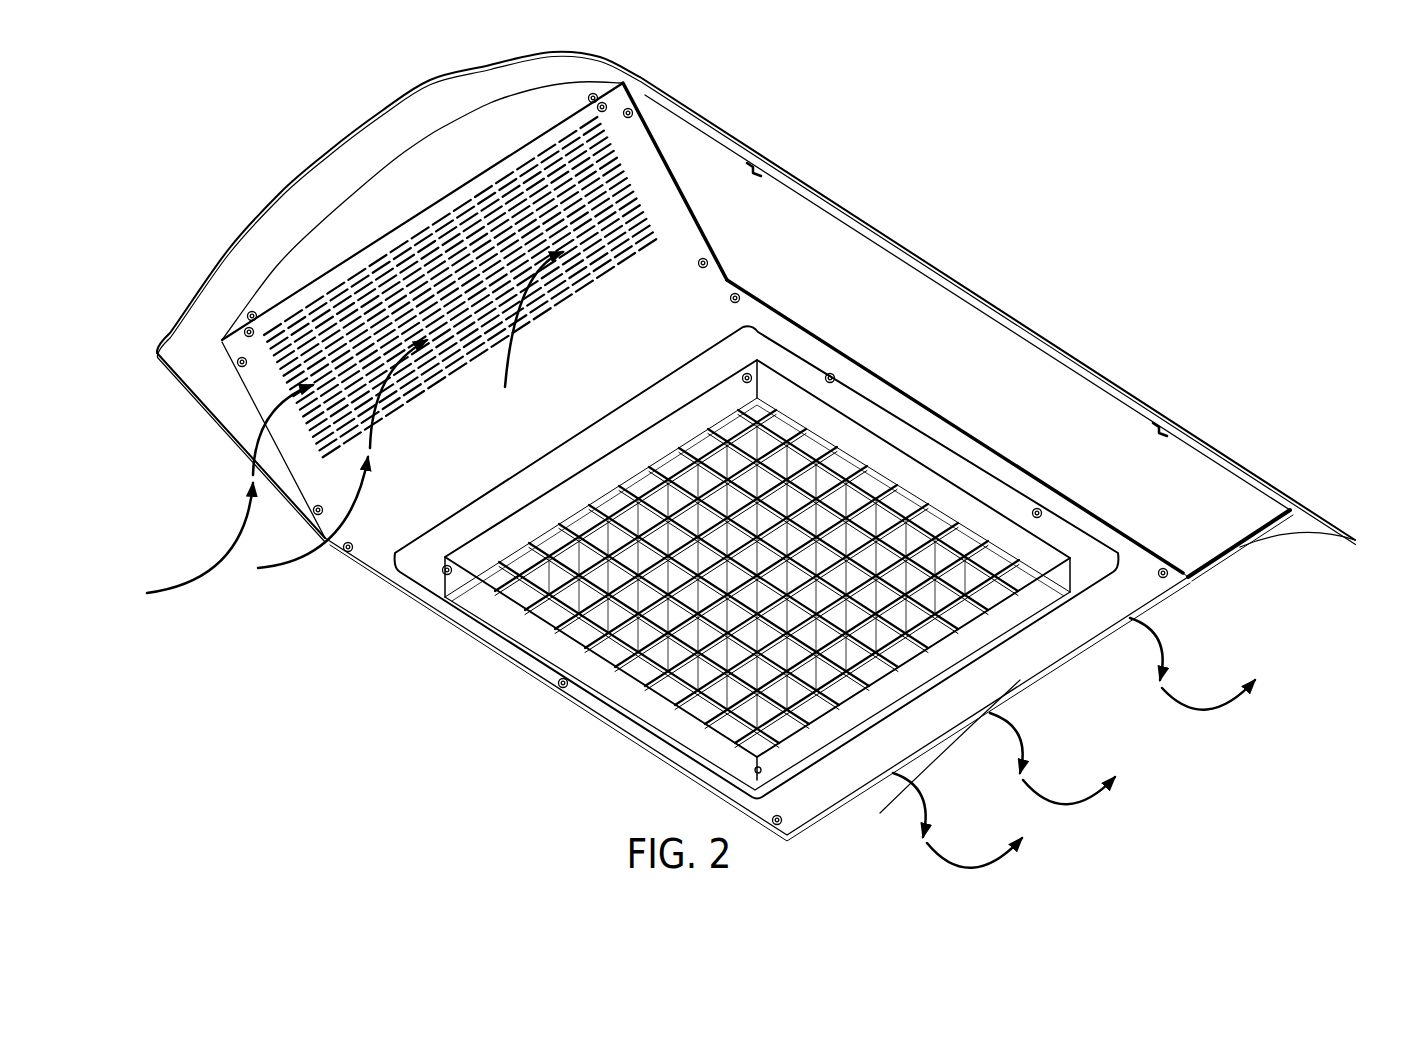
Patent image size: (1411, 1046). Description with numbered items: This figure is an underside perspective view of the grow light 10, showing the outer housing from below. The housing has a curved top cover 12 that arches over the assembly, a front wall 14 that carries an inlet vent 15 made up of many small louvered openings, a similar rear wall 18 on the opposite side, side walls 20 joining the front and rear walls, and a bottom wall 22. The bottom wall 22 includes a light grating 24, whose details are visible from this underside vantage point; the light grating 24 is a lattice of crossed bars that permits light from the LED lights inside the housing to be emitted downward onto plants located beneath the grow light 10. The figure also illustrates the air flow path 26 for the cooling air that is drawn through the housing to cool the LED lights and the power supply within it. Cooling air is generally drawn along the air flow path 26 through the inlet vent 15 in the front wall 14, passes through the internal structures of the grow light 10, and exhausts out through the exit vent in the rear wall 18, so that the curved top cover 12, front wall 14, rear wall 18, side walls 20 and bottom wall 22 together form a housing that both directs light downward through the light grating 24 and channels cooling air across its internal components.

The grow light 10 is at (997, 210).
The curved top cover 12 is at (725, 128).
The front wall 14 is at (255, 375).
The inlet vent 15 is at (278, 378).
The rear wall 18 is at (1180, 607).
The side walls 20 is at (997, 473).
The bottom wall 22 is at (367, 558).
The light grating 24 is at (497, 628).
The air flow path 26 is at (240, 518).